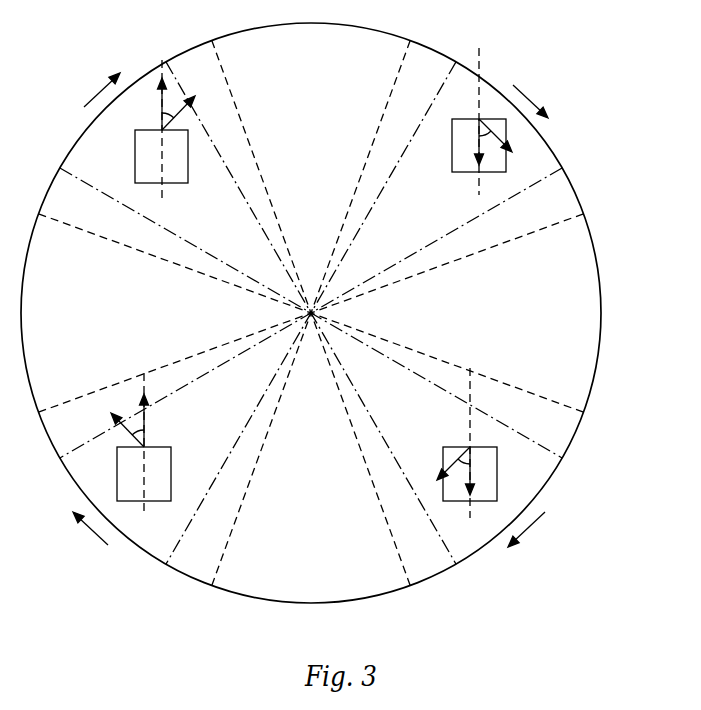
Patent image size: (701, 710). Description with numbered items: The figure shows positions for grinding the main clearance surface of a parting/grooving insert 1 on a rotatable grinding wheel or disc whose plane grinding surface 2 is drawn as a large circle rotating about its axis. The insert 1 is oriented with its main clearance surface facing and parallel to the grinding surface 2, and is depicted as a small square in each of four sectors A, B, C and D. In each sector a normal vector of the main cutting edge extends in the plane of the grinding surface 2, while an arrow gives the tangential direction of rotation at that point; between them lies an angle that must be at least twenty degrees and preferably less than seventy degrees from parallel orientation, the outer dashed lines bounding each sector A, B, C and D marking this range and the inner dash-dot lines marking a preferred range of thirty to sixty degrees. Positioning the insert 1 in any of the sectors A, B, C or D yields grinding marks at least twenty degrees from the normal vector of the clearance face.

The parting/grooving insert 1 is at (497, 471).
The plane grinding surface 2 is at (551, 313).
The sector A is at (113, 476).
The sector B is at (508, 470).
The sector C is at (130, 116).
The sector D is at (515, 118).